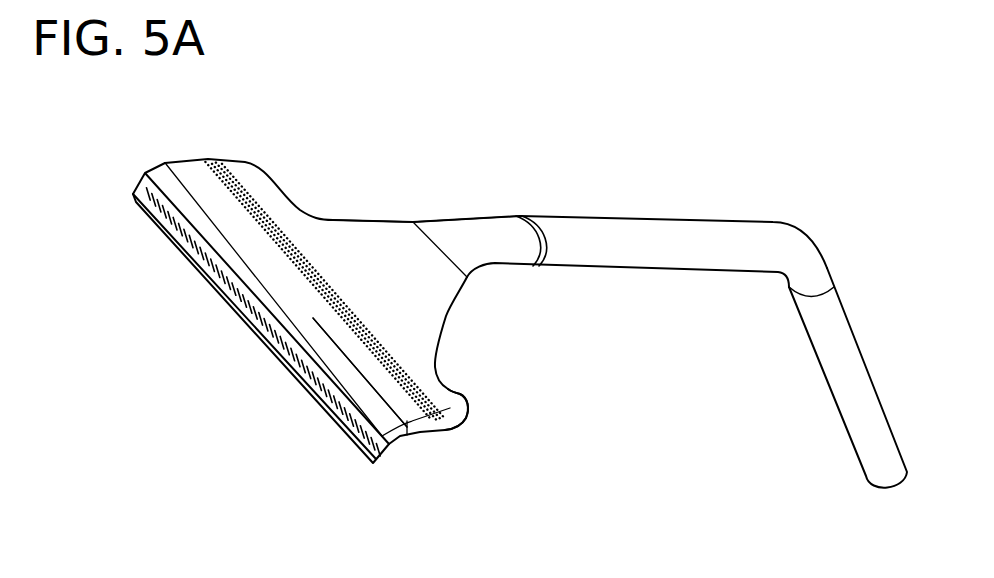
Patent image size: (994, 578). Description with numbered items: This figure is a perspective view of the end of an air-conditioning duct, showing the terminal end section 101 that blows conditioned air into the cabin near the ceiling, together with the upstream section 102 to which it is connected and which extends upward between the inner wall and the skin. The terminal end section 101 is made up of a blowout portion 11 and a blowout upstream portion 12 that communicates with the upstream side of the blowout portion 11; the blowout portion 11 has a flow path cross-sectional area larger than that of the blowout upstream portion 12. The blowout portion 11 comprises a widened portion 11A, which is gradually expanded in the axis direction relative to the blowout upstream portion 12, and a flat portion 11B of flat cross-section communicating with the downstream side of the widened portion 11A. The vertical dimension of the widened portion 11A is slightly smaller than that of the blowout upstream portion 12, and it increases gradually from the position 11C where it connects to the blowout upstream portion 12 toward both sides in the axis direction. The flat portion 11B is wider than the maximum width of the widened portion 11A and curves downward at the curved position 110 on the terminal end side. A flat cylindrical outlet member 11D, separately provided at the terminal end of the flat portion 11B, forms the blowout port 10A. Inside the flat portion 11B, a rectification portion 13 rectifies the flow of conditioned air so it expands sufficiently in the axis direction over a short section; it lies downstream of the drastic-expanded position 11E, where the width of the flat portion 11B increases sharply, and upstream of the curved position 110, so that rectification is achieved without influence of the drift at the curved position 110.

The terminal end section 101 is at (450, 57).
The blowout portion 11 is at (242, 97).
The blowout upstream portion 12 is at (635, 215).
The upstream section 102 is at (862, 352).
The widened portion 11A is at (508, 211).
The flat portion 11B is at (208, 163).
The position connected to the blowout upstream portion 11C is at (531, 268).
The flat cylindrical outlet member 11D is at (208, 283).
The drastic-expanded position 11E is at (450, 386).
The curved position 110 is at (192, 206).
The rectification portion 13 is at (323, 316).
The blowout port 10A is at (298, 380).